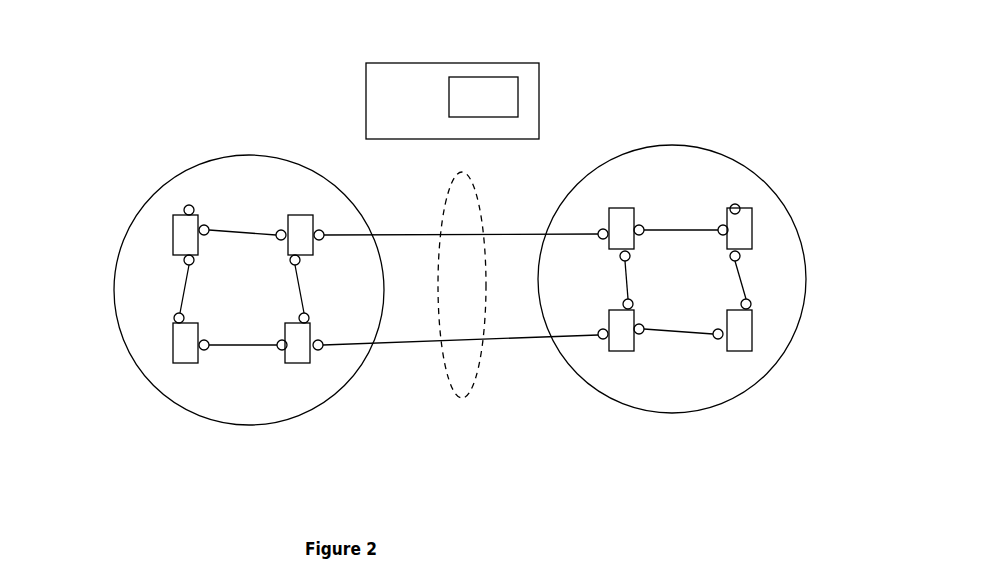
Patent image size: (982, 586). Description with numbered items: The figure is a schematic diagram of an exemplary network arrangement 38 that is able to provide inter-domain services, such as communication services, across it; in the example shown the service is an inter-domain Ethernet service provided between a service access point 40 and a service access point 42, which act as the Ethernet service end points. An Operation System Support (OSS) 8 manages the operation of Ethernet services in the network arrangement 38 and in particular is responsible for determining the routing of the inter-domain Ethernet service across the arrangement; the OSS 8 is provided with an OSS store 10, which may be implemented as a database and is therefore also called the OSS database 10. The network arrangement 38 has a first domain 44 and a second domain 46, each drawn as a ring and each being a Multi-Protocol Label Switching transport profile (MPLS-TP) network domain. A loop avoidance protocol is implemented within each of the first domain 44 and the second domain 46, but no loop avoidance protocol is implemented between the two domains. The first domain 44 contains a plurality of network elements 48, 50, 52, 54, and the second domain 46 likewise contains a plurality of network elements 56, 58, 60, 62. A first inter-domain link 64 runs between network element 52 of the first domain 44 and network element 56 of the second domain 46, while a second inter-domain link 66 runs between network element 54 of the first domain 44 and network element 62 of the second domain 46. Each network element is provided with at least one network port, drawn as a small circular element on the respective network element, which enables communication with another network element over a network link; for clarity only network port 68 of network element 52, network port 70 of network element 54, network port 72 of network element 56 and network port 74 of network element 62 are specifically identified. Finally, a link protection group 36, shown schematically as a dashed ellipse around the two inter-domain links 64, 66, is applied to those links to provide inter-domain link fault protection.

The operation system support (OSS) 8 is at (366, 77).
The OSS store 10 is at (518, 98).
The link protection group 36 is at (452, 387).
The network arrangement 38 is at (46, 481).
The service access point 40 is at (176, 200).
The service access point 42 is at (743, 198).
The first domain 44 is at (197, 413).
The second domain 46 is at (688, 415).
The network element 48 is at (173, 345).
The network element 50 is at (173, 232).
The network element 52 is at (300, 215).
The network element 54 is at (293, 363).
The network element 56 is at (623, 208).
The network element 58 is at (752, 222).
The network element 60 is at (752, 327).
The network element 62 is at (622, 351).
The first inter-domain link 64 is at (429, 233).
The second inter-domain link 66 is at (425, 340).
The network port 68 is at (321, 231).
The network port 70 is at (320, 352).
The network port 72 is at (599, 231).
The network port 74 is at (599, 337).